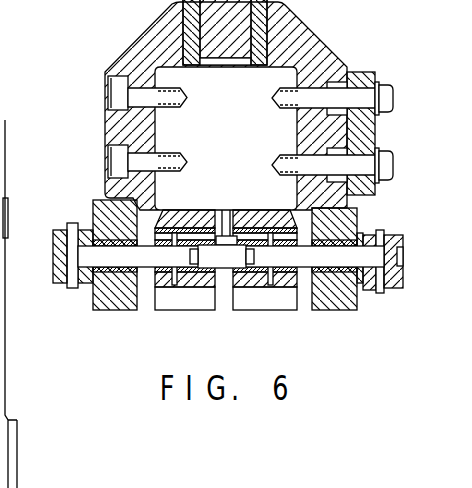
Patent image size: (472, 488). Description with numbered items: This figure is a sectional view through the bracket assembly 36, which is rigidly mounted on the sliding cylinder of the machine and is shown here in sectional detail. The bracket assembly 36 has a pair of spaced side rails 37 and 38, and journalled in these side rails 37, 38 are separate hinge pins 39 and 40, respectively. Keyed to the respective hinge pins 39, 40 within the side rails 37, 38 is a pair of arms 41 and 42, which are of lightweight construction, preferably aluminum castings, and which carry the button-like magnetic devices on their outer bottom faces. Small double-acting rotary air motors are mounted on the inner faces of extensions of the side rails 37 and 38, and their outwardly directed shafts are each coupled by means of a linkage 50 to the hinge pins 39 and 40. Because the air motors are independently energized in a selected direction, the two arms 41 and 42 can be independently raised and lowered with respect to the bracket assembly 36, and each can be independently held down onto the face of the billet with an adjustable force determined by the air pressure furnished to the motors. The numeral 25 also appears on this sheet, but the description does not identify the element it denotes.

The bracket assembly 36 is at (219, 293).
The side rail 37 is at (119, 308).
The side rail 38 is at (338, 303).
The hinge pin 39 is at (58, 252).
The hinge pin 40 is at (399, 260).
The arm 41 is at (200, 290).
The arm 42 is at (257, 290).
The linkage 50 is at (63, 282).
The member 25 is at (238, 485).